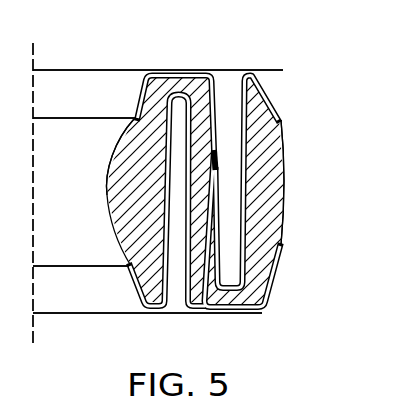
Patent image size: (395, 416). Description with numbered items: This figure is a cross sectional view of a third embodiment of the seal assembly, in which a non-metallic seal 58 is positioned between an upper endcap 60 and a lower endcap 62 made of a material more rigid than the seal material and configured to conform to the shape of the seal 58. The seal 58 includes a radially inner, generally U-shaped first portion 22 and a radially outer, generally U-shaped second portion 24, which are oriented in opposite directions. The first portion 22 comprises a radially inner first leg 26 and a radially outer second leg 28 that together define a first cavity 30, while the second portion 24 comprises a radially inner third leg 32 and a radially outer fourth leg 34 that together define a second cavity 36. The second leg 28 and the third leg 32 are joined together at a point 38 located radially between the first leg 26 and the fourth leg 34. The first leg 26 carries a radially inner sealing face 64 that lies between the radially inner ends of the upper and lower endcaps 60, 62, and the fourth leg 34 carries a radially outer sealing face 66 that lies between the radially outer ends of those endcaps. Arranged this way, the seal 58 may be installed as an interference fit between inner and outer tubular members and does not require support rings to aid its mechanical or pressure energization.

The first portion 22 is at (158, 59).
The second portion 24 is at (264, 322).
The first leg 26 is at (121, 150).
The second leg 28 is at (216, 128).
The first cavity 30 is at (179, 134).
The third leg 32 is at (182, 292).
The fourth leg 34 is at (277, 137).
The second cavity 36 is at (237, 235).
The point 38 is at (206, 192).
The seal 58 is at (311, 77).
The upper endcap 60 is at (257, 71).
The lower endcap 62 is at (148, 311).
The radially inner sealing face 64 is at (105, 193).
The radially outer sealing face 66 is at (285, 163).